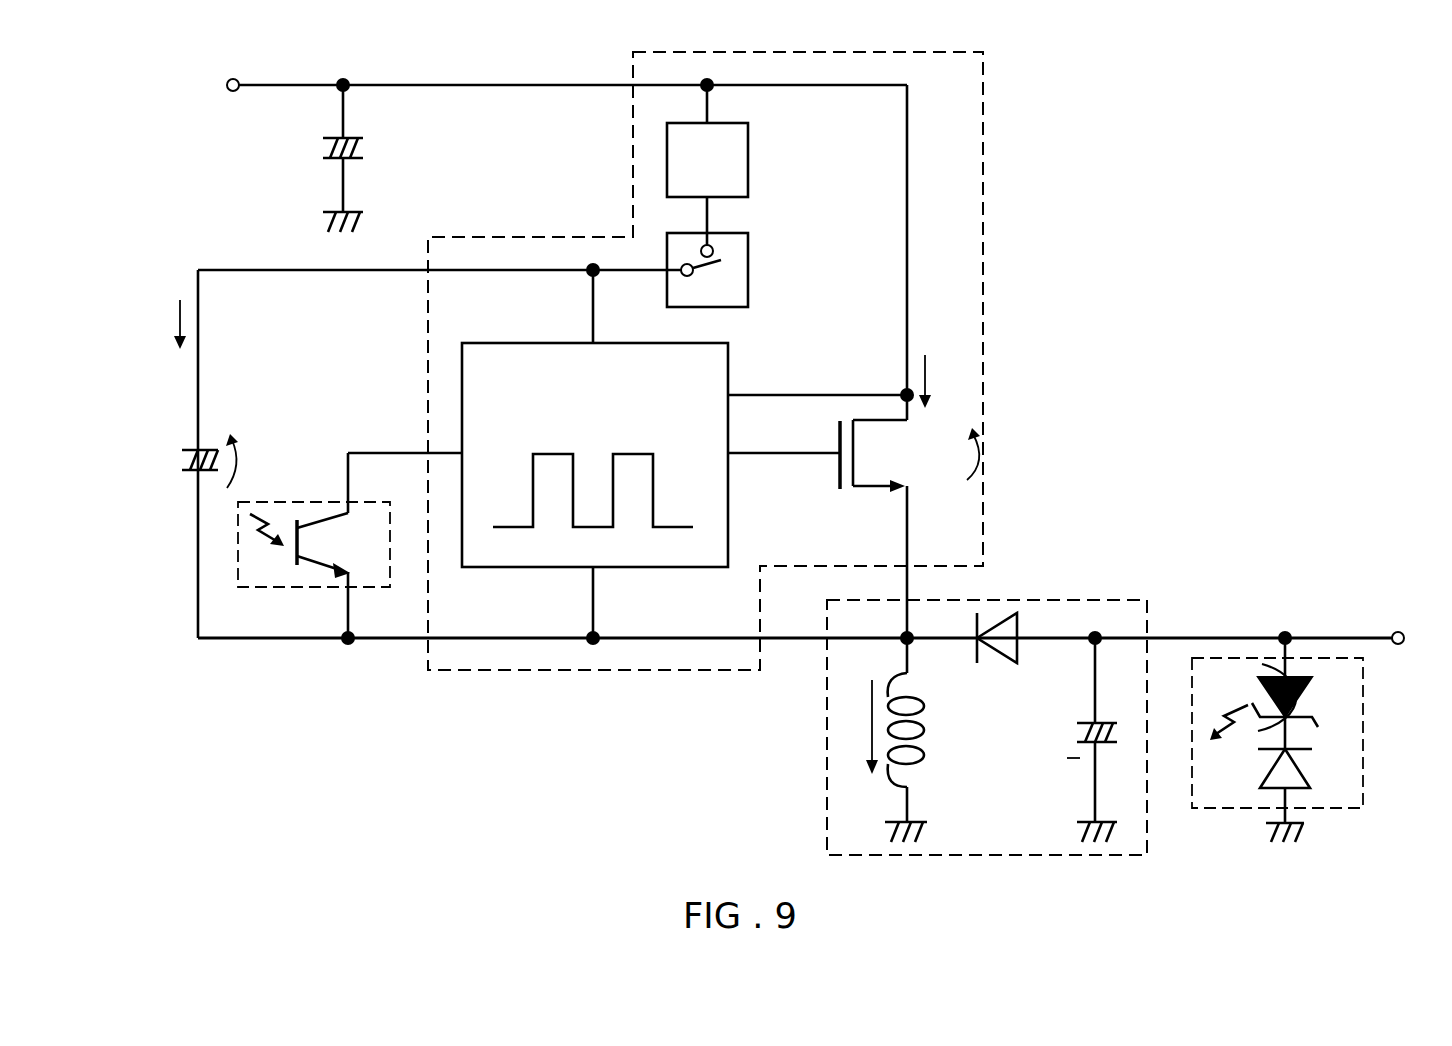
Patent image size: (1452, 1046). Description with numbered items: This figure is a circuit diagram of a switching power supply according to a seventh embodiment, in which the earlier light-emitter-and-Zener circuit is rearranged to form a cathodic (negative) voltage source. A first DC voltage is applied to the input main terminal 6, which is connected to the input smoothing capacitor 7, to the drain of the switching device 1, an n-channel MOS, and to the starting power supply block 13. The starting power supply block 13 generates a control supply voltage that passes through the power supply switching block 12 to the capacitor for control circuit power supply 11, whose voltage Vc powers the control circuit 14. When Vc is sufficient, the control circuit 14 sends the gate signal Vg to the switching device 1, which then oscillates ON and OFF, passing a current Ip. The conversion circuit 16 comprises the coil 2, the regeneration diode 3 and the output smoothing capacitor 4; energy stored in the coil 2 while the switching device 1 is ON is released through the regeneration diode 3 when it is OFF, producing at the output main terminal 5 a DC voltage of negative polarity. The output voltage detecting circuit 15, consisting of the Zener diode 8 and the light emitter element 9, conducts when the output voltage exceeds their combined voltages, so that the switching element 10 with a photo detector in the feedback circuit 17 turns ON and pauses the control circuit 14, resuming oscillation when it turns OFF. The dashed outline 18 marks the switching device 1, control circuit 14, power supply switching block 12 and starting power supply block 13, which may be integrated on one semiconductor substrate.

The switching device 1 is at (855, 455).
The coil 2 is at (925, 733).
The regeneration diode 3 is at (992, 657).
The output smoothing capacitor 4 is at (1077, 732).
The output main terminal 5 is at (1403, 631).
The input main terminal 6 is at (228, 94).
The input smoothing capacitor 7 is at (363, 148).
The Zener diode 8 is at (1305, 765).
The light emitter element 9 is at (1337, 697).
The switching element with a photo detector 10 is at (300, 537).
The capacitor for control circuit power supply 11 is at (182, 460).
The power supply switching block 12 is at (748, 268).
The starting power supply block 13 is at (748, 158).
The control circuit 14 is at (728, 358).
The output voltage detecting circuit 15 is at (1310, 810).
The conversion circuit 16 is at (1075, 598).
The feedback circuit 17 is at (285, 590).
The elements integrated on the same semiconductor substrate 18 is at (983, 128).